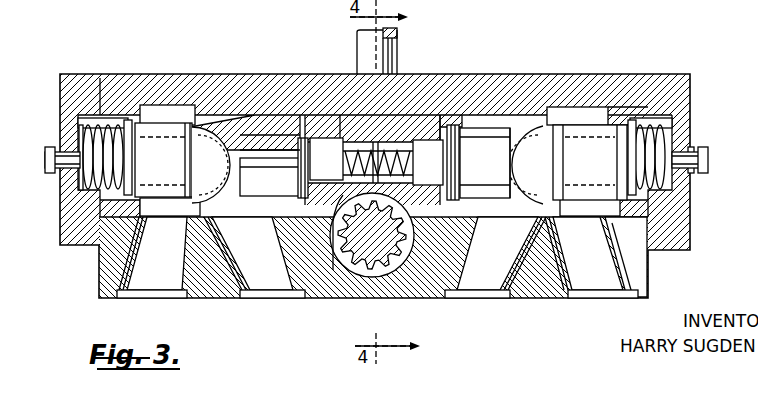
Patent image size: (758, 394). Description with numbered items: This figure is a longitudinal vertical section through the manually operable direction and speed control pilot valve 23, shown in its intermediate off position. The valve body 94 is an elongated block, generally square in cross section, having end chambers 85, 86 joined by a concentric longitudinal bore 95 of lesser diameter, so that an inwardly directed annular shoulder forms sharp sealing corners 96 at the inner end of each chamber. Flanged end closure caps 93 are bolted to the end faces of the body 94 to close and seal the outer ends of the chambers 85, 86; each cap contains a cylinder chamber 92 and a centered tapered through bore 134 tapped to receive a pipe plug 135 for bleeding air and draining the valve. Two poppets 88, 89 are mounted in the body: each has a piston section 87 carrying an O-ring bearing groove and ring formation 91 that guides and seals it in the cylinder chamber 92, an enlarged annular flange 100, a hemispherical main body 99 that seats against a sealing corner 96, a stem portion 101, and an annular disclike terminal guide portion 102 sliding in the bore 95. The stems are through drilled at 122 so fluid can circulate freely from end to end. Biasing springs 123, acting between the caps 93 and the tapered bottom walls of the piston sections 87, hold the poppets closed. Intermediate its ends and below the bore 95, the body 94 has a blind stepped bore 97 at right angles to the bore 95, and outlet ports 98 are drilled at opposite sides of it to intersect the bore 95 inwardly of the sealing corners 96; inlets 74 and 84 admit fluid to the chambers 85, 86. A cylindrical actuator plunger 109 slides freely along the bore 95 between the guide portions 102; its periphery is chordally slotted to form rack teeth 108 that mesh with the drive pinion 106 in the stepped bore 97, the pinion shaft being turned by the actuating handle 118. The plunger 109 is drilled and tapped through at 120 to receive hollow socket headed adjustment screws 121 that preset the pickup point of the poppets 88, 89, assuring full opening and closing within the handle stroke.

The pilot control valve 23 is at (663, 72).
The end closure cap 93 is at (683, 88).
The chamber 85 is at (158, 113).
The O-ring bearing groove and ring formation 91 is at (105, 100).
The cylinder chamber 92 is at (96, 126).
The tapered through bore 134 is at (60, 157).
The pipe plug 135 is at (62, 163).
The biasing spring 123 is at (80, 160).
The piston section 87 is at (148, 168).
The poppet 88 is at (236, 110).
The poppet 89 is at (540, 133).
The annular flange 100 is at (192, 118).
The stem portion 101 is at (254, 147).
The terminal guide portion 102 is at (300, 147).
The adjustment screw 121 is at (328, 143).
The tapped through bore 120 is at (373, 152).
The actuating handle 118 is at (386, 40).
The actuator plunger 109 is at (404, 122).
The valve body 94 is at (490, 130).
The longitudinal bore 95 is at (537, 130).
The chamber 86 is at (587, 110).
The sealing corner 96 is at (195, 215).
The main body 99 is at (375, 249).
The through drilling 122 is at (270, 179).
The inlet 74 is at (158, 282).
The outlet port 98 is at (277, 282).
The rack teeth 108 is at (332, 270).
The stepped bore 97 is at (350, 263).
The drive pinion 106 is at (387, 257).
The inlet 84 is at (607, 283).